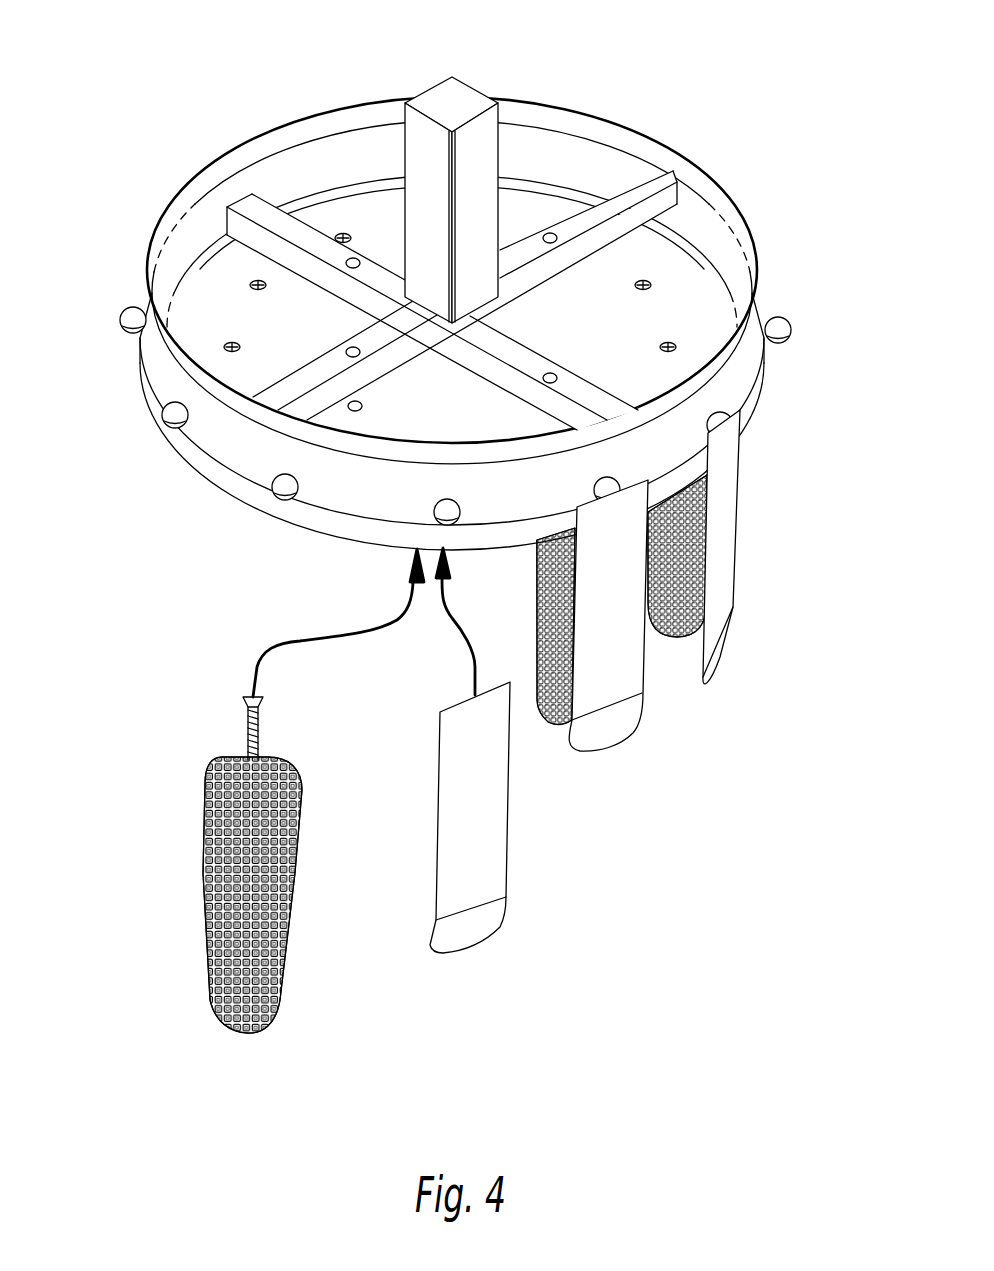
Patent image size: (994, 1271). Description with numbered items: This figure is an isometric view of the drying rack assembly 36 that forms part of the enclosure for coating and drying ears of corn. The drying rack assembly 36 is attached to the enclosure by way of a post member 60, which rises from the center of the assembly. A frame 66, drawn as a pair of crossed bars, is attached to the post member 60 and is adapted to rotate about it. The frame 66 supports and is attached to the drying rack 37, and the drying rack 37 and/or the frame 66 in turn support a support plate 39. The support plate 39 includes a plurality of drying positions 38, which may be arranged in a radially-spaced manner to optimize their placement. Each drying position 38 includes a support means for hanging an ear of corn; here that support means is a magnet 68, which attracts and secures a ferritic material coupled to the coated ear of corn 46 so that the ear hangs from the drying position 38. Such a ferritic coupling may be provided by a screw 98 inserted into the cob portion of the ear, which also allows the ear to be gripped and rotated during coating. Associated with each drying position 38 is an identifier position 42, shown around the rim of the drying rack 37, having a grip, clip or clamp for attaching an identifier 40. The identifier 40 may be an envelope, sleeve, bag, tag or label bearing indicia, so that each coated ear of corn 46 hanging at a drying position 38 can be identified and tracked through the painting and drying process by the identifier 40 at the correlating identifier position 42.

The drying rack assembly 36 is at (649, 47).
The drying rack 37 is at (743, 213).
The drying position 38 is at (262, 278).
The support plate 39 is at (533, 213).
The identifier 40 is at (726, 509).
The identifier position 42 is at (131, 320).
The coated ear of corn 46 is at (547, 607).
The post member 60 is at (418, 137).
The frame 66 is at (247, 203).
The magnet 68 is at (343, 234).
The screw 98 is at (248, 731).